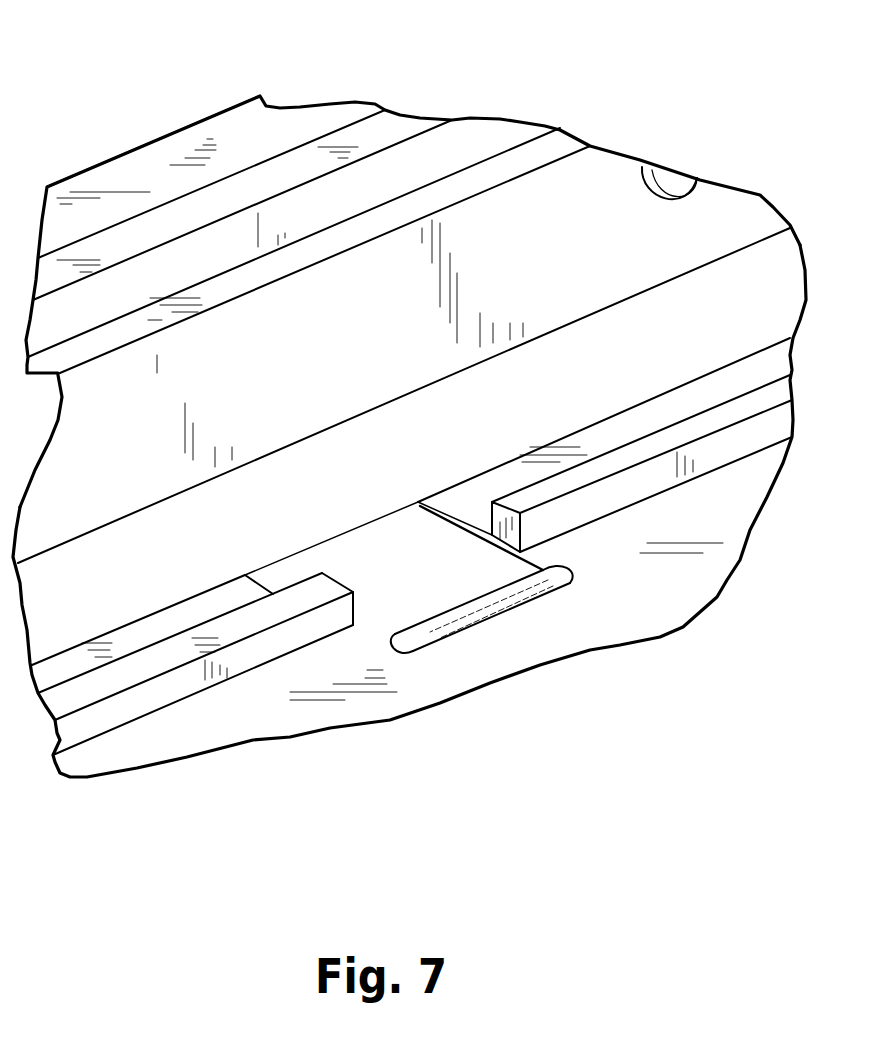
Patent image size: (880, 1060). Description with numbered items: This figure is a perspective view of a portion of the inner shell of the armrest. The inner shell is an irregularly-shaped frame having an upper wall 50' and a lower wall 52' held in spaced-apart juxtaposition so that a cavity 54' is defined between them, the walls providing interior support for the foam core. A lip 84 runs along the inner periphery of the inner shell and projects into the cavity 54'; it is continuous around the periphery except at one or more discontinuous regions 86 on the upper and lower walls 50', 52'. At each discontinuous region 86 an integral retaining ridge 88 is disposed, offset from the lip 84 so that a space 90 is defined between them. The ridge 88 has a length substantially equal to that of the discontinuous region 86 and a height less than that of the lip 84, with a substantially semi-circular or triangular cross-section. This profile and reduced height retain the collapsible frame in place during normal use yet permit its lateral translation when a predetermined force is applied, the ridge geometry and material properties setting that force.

The upper wall 50' is at (410, 263).
The lower wall 52' is at (415, 502).
The cavity 54' is at (620, 463).
The lip 84 is at (250, 650).
The discontinuous region 86 is at (413, 500).
The retaining ridge 88 is at (483, 603).
The space 90 is at (382, 646).